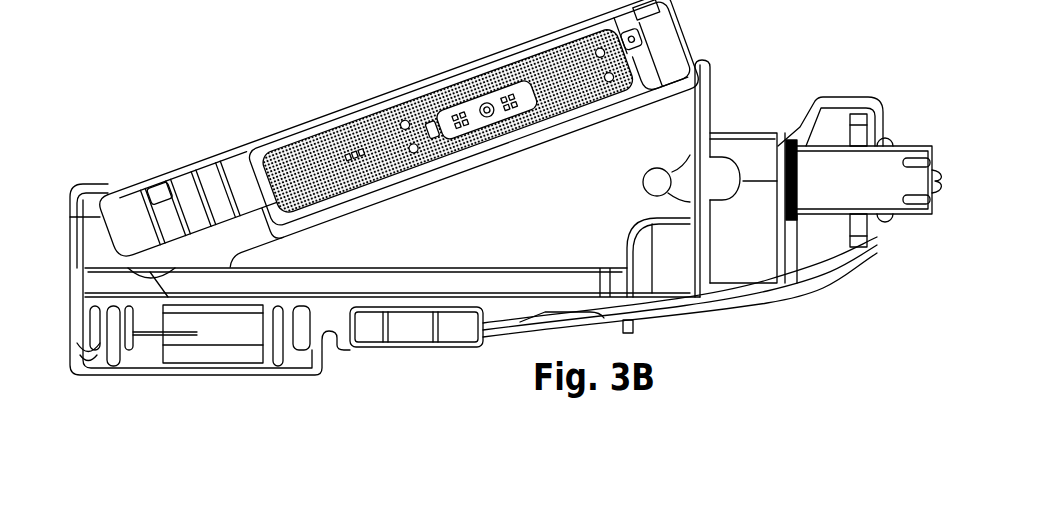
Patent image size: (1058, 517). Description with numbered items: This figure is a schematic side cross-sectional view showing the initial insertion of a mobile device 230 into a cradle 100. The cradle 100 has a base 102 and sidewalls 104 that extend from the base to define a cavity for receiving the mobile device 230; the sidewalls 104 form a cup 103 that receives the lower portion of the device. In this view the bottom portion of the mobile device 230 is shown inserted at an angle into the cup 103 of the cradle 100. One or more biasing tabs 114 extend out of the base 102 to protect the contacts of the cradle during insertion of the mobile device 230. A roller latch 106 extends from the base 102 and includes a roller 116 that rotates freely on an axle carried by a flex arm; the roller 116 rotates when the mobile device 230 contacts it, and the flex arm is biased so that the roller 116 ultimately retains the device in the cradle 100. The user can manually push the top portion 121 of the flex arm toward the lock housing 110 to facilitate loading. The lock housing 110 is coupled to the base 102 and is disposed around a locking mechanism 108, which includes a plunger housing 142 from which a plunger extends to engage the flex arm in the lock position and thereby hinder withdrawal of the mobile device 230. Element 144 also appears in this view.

The cradle 100 is at (502, 205).
The base 102 is at (513, 295).
The cup 103 is at (90, 180).
The sidewalls 104 is at (437, 280).
The roller latch 106 is at (693, 103).
The locking mechanism 108 is at (913, 213).
The lock housing 110 is at (838, 282).
The biasing tabs 114 is at (163, 293).
The roller 116 is at (643, 175).
The top portion 121 is at (703, 60).
The plunger housing 142 is at (907, 147).
The latch lobe 144 is at (728, 163).
The mobile device 230 is at (350, 100).